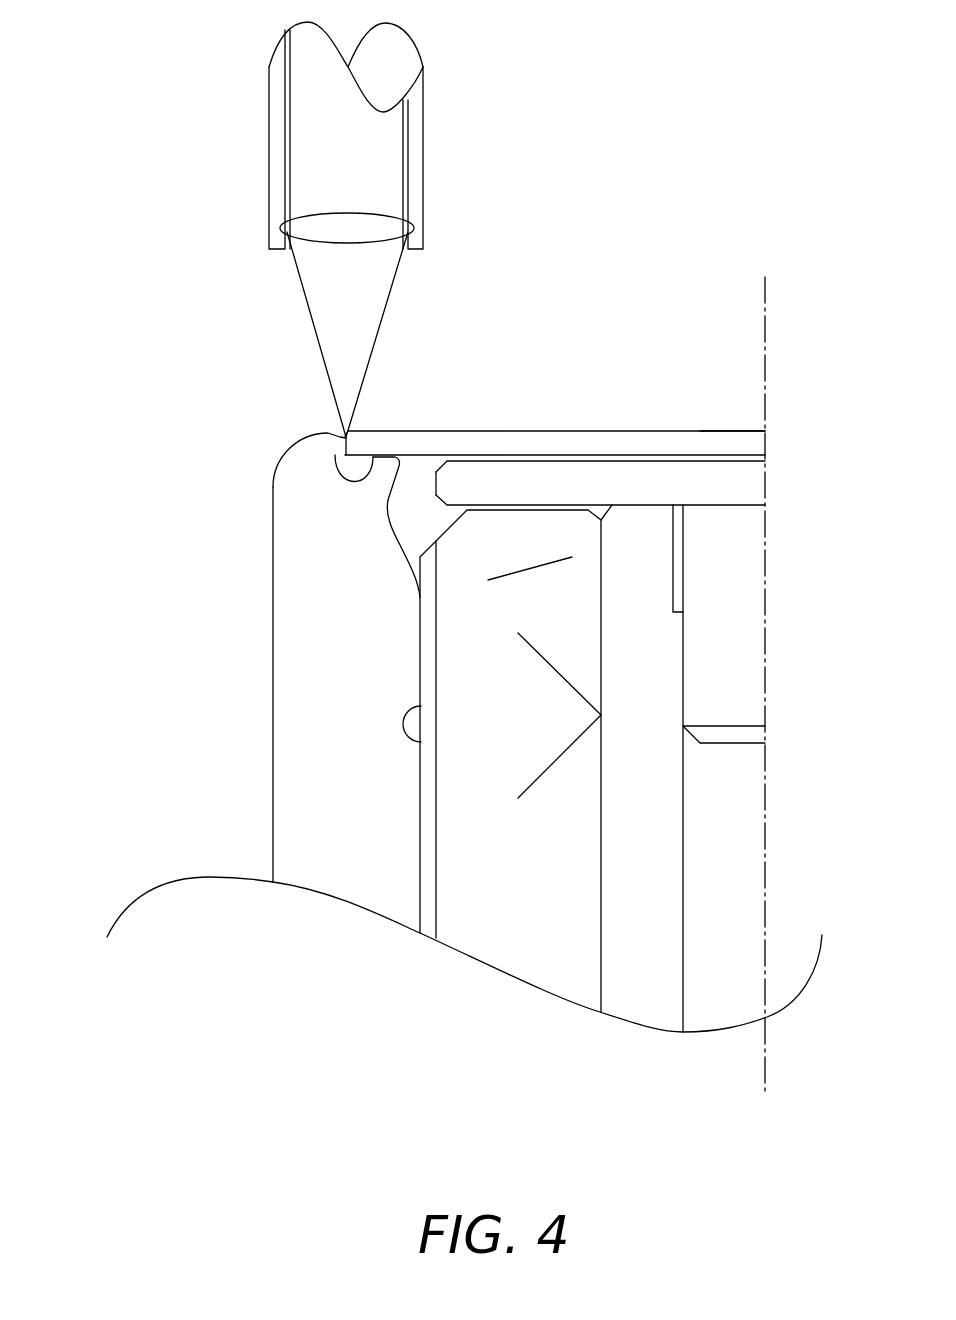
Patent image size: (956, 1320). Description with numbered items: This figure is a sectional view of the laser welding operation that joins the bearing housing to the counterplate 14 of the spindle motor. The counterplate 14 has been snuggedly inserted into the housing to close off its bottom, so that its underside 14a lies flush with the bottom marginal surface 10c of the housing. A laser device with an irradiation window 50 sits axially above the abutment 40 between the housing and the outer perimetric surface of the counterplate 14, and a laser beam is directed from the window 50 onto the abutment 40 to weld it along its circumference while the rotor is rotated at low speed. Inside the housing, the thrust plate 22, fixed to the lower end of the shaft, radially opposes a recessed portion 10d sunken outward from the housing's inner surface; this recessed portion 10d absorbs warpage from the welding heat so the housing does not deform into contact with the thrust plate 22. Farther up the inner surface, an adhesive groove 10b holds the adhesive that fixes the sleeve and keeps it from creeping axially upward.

The irradiation window 50 is at (363, 250).
The abutment 40 is at (346, 437).
The thrust plate 22 is at (583, 487).
The counterplate 14 is at (655, 450).
The underside of counterplate 14a is at (728, 432).
The bottom marginal surface of bearing housing 10c is at (327, 433).
The recessed portion 10d is at (392, 527).
The adhesive groove 10b is at (400, 723).